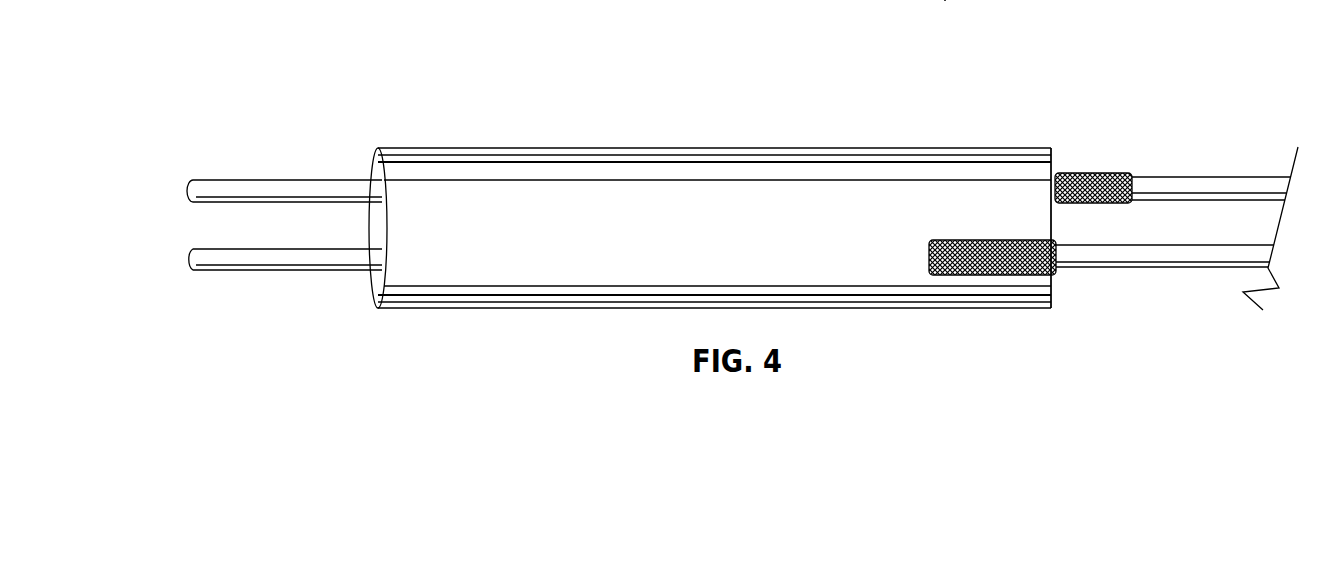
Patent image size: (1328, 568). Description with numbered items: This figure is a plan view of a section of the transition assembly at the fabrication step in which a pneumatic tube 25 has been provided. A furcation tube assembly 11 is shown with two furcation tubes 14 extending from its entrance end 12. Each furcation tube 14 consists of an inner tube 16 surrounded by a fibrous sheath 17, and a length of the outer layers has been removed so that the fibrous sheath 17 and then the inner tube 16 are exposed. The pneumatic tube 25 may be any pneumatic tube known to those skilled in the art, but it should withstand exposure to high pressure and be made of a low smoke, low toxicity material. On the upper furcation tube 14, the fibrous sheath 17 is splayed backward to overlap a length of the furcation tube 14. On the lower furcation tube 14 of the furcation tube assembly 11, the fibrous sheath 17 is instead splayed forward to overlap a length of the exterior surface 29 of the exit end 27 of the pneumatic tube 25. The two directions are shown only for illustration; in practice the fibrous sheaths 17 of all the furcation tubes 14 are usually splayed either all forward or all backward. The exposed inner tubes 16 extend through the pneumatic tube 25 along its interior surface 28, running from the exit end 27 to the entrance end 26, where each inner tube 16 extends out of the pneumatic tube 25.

The furcation tube assembly 11 is at (1185, 97).
The entrance end 12 is at (945, 0).
The furcation tube 14 is at (1175, 188).
The inner tube 16 is at (230, 187).
The fibrous sheath 17 is at (1107, 173).
The pneumatic tube 25 is at (685, 150).
The entrance end 26 is at (380, 148).
The exit end 27 is at (1051, 147).
The interior surface 28 is at (373, 233).
The exterior surface 29 is at (917, 265).